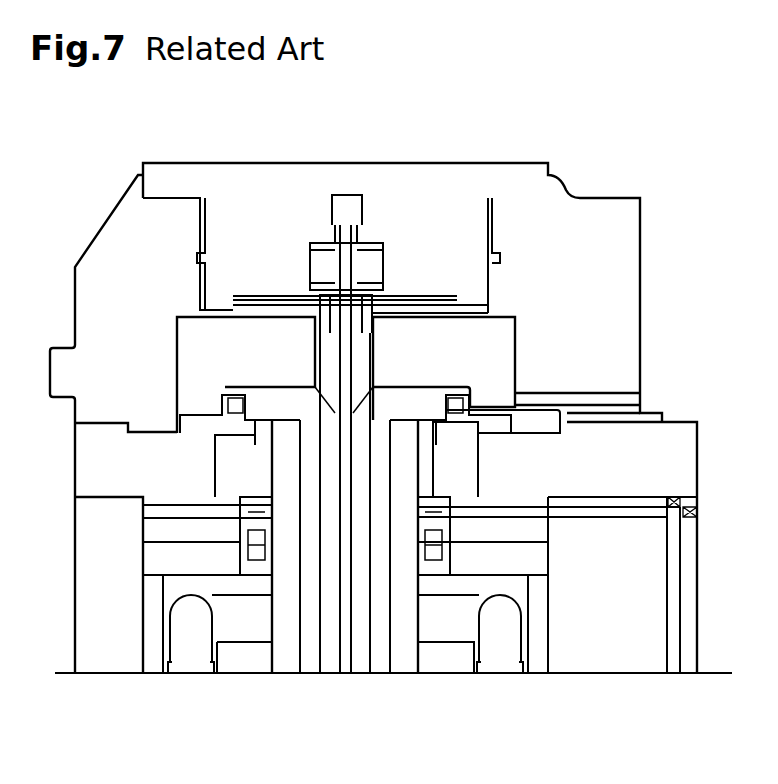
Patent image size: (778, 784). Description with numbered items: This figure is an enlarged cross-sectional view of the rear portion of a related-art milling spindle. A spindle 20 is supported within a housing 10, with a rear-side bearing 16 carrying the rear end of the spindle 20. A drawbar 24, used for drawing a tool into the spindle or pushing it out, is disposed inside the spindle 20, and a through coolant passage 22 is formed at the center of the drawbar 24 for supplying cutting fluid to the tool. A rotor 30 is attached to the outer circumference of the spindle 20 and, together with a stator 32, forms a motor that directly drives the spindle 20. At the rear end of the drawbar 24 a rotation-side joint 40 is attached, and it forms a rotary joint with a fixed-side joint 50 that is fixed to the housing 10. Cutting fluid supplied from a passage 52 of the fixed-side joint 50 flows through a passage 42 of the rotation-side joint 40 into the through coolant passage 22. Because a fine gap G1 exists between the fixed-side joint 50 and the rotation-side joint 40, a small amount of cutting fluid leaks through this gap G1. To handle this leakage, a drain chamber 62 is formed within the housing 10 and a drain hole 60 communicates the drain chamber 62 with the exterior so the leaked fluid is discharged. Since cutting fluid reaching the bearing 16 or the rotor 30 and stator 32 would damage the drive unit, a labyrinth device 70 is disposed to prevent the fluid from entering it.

The housing 10 is at (88, 614).
The rear-side bearing 16 is at (240, 540).
The spindle 20 is at (280, 662).
The through coolant passage 22 is at (346, 663).
The drawbar 24 is at (361, 663).
The rotor 30 is at (443, 663).
The stator 32 is at (503, 657).
The rotation-side joint 40 is at (487, 297).
The passage 42 is at (345, 312).
The fixed-side joint 50 is at (370, 265).
The passage 52 is at (345, 245).
The drain hole 60 is at (600, 397).
The drain chamber 62 is at (465, 347).
The labyrinth device 70 is at (222, 407).
The gap G1 is at (390, 294).